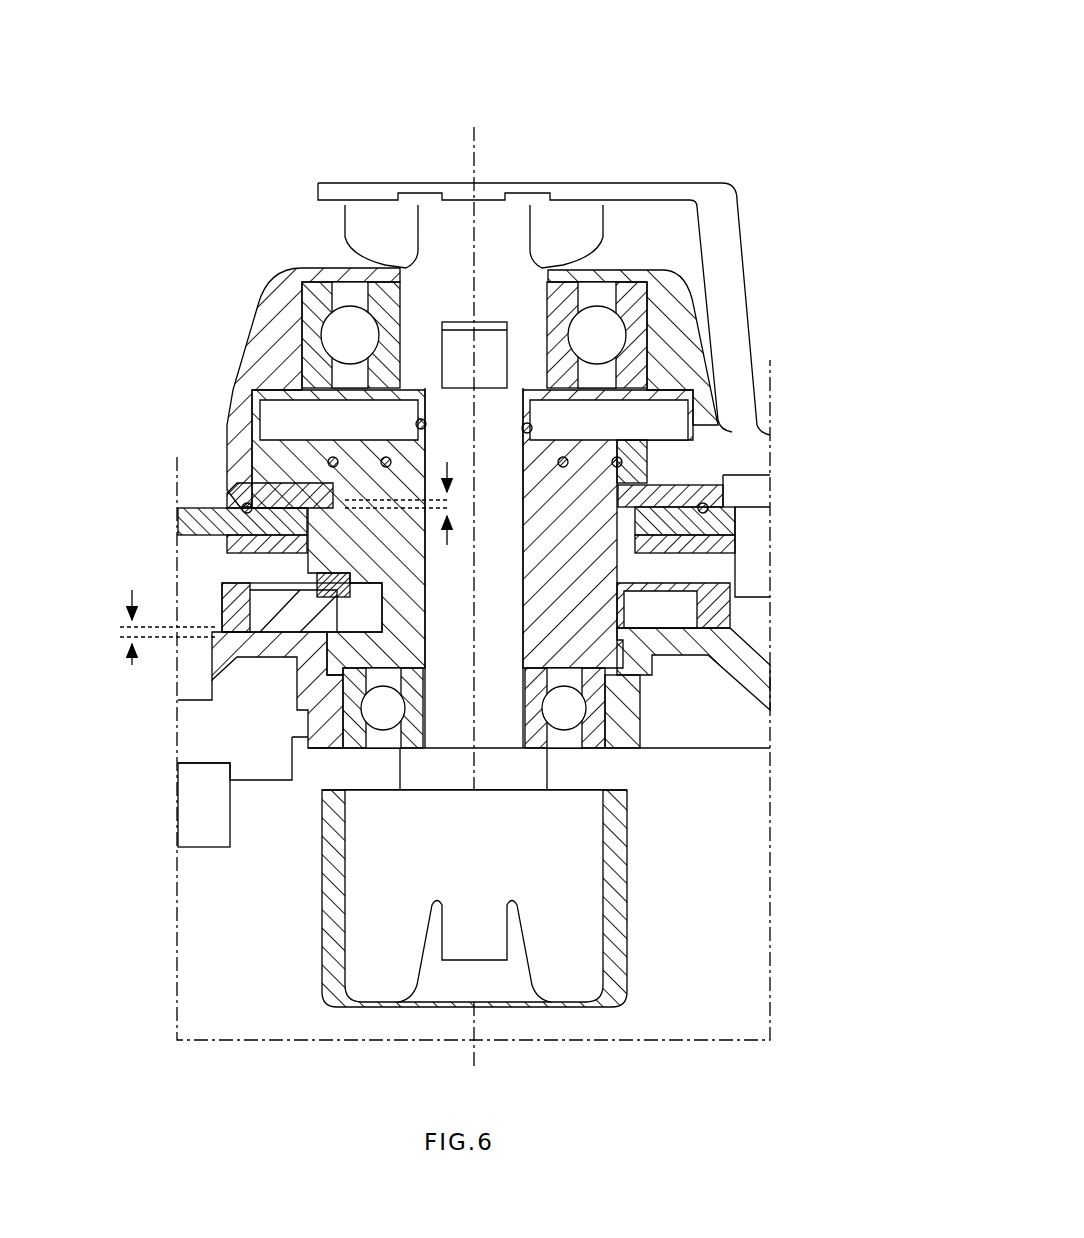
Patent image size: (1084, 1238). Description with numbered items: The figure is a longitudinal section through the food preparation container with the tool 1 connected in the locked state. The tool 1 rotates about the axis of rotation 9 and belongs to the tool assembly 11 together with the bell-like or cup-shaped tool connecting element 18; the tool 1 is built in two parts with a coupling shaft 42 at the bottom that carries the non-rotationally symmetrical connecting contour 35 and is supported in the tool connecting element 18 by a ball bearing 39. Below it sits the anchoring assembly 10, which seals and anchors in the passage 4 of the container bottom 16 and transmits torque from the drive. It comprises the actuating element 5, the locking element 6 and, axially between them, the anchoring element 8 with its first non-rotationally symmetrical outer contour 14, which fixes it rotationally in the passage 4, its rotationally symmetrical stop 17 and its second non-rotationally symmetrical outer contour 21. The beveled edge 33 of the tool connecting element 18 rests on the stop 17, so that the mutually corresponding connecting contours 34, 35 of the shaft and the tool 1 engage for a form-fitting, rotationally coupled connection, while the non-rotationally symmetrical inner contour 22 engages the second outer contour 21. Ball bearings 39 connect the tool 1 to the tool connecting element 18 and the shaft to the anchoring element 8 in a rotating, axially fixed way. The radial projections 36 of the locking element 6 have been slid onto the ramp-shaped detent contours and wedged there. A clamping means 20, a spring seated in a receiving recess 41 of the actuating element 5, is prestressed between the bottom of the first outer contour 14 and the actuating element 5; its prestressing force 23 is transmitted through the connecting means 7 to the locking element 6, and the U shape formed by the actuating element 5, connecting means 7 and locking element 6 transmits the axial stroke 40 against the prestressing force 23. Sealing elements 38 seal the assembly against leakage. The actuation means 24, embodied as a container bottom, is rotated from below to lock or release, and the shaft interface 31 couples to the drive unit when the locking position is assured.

The tool 1 is at (778, 152).
The passage 4 is at (258, 480).
The actuating element 5 is at (285, 605).
The locking element 6 is at (587, 433).
The connecting means 7 is at (593, 513).
The anchoring element 8 is at (640, 735).
The axis of rotation 9 is at (474, 127).
The anchoring assembly 10 is at (818, 668).
The tool assembly 11 is at (808, 268).
The first non-rotationally symmetrical outer contour 14 is at (227, 545).
The container bottom 16 is at (188, 527).
The stop 17 is at (285, 458).
The tool connecting element 18 is at (672, 312).
The clamping means 20 is at (290, 657).
The second non-rotationally symmetrical outer contour 21 is at (307, 437).
The non-rotationally symmetrical inner contour 22 is at (690, 460).
The prestressing force 23 is at (675, 462).
The actuation means 24 is at (727, 603).
The shaft interface 31 is at (380, 965).
The edge 33 is at (725, 482).
The connecting contour 34 is at (488, 355).
The connecting contour 35 is at (428, 352).
The radial projections 36 is at (300, 490).
The sealing element 38 is at (563, 462).
The ball bearings 39 is at (303, 278).
The stroke 40 is at (277, 563).
The receiving recess 41 is at (337, 590).
The coupling shaft 42 is at (457, 238).